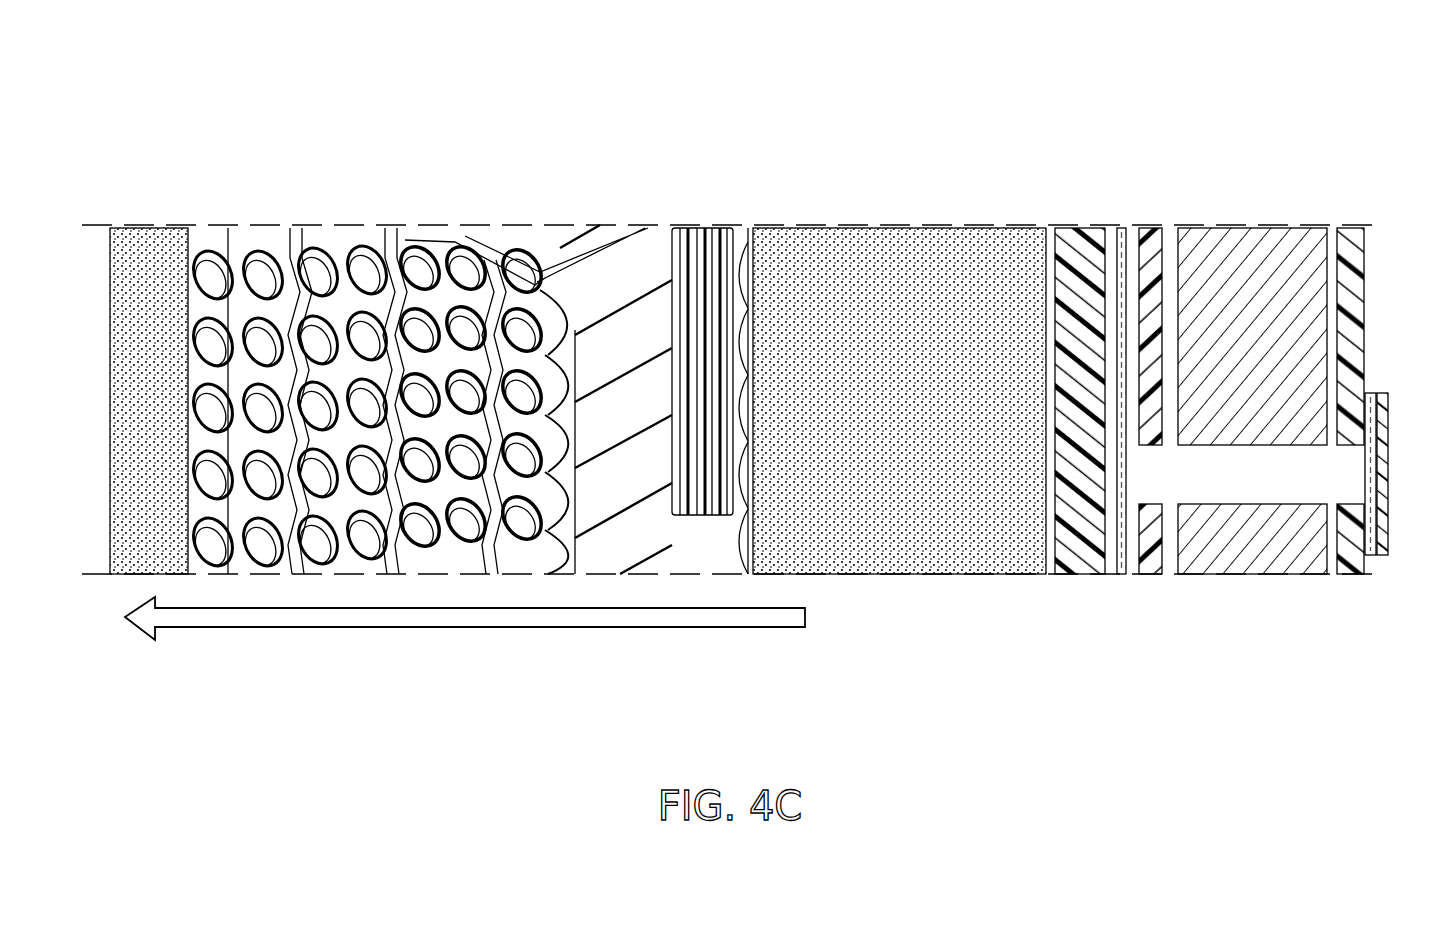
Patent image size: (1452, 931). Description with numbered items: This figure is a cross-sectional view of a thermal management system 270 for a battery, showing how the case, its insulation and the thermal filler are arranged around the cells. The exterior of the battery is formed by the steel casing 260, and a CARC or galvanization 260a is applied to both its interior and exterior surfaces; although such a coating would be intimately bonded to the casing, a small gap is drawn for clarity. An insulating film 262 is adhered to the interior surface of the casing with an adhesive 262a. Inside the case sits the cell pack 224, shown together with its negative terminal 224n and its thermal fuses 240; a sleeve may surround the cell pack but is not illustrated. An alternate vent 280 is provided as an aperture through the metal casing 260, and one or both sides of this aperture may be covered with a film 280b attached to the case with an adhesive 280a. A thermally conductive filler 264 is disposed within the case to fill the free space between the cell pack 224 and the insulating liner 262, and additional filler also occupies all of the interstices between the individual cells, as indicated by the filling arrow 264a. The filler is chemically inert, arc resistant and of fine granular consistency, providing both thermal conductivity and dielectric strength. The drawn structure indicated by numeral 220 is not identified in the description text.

The coil assembly 220 is at (455, 285).
The cell pack 224 is at (486, 312).
The negative terminal 224n is at (708, 228).
The thermal fuses 240 is at (285, 305).
The steel casing 260 is at (1292, 256).
The CARC or galvanization 260a is at (1152, 562).
The insulating film 262 is at (1068, 240).
The adhesive 262a is at (1121, 240).
The thermally conductive filler 264 is at (148, 240).
The filling arrow 264a is at (505, 628).
The thermal management system 270 is at (927, 607).
The alternate vent 280 is at (1233, 486).
The adhesive 280a is at (1381, 557).
The film 280b is at (1384, 403).